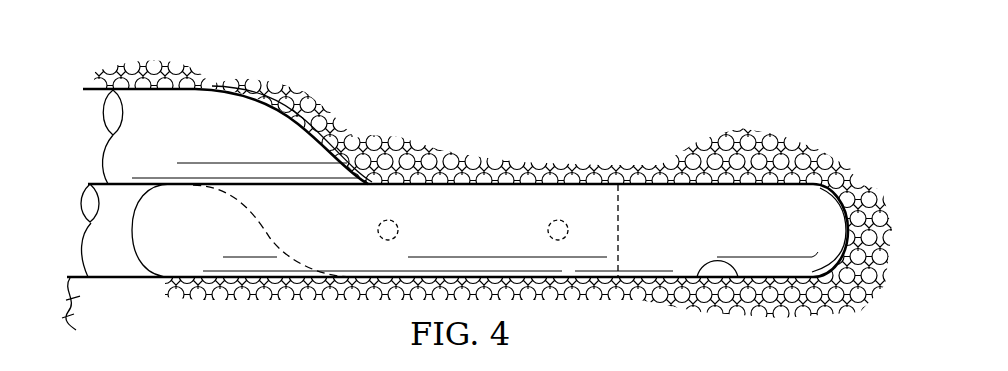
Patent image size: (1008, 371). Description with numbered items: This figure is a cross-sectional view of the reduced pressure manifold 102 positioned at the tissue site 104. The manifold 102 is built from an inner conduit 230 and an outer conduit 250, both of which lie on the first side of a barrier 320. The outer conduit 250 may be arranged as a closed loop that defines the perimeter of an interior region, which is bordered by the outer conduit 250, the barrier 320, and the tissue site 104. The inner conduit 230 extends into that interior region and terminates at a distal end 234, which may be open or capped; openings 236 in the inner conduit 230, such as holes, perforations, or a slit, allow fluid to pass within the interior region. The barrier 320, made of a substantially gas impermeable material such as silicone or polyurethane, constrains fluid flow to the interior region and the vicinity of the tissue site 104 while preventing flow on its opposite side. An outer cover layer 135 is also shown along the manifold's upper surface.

The reduced pressure manifold 102 is at (592, 139).
The tissue site 104 is at (738, 278).
The outer cover layer 135 is at (250, 97).
The inner conduit 230 is at (175, 107).
The distal end 234 is at (618, 235).
The openings 236 is at (550, 228).
The outer conduit 250 is at (827, 183).
The barrier 320 is at (667, 182).